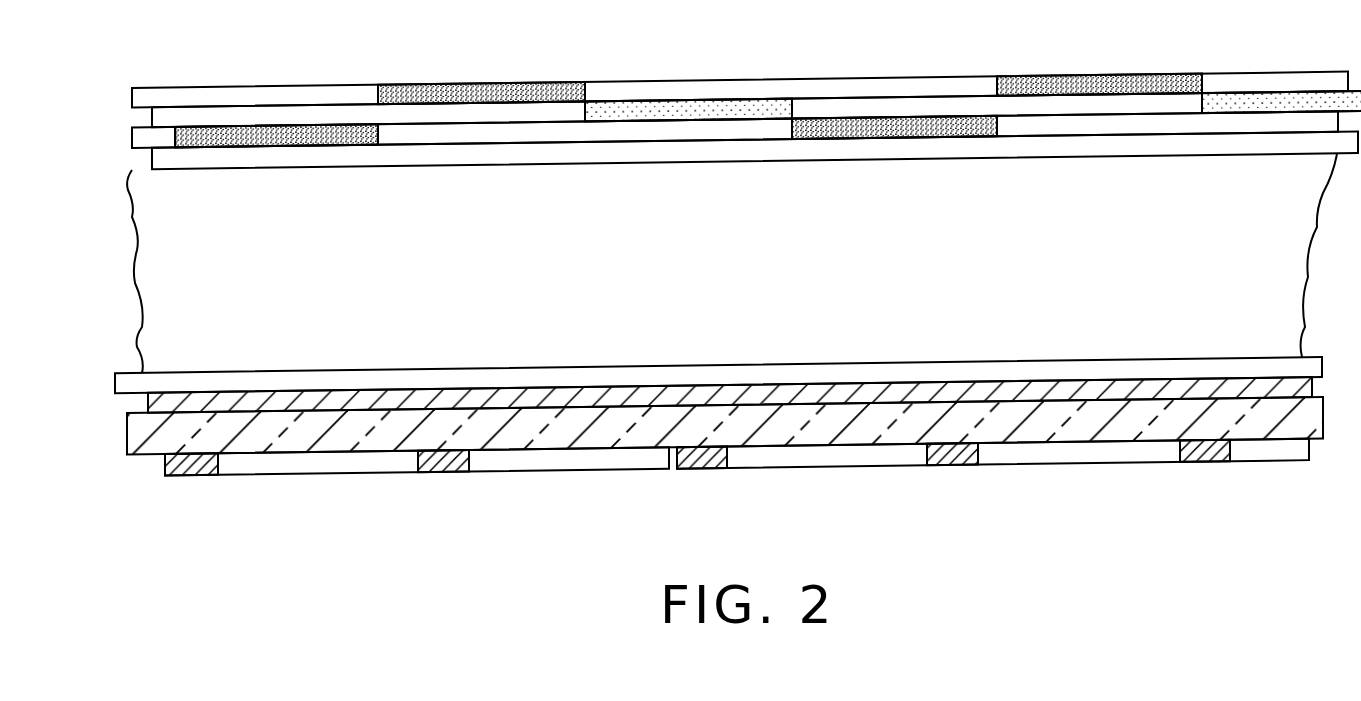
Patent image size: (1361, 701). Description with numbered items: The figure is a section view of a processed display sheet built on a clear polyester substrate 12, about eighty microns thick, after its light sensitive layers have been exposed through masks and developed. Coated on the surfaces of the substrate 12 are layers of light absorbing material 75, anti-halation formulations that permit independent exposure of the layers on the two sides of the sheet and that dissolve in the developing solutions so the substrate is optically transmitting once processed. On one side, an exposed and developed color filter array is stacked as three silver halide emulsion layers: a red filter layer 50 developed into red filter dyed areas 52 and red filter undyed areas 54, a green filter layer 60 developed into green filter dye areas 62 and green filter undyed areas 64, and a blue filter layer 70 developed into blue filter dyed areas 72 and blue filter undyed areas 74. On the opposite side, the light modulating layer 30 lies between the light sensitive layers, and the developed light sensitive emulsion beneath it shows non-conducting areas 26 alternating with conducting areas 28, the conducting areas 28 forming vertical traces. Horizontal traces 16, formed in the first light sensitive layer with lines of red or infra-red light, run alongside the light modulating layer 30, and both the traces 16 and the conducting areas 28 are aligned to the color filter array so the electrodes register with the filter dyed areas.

The substrate 12 is at (155, 237).
The horizontal traces 16 is at (148, 402).
The non-conducting areas 26 is at (302, 465).
The conducting areas 28 is at (453, 472).
The light modulating layer 30 is at (143, 447).
The red filter layer 50 is at (122, 136).
The red filter dyed areas 52 is at (268, 136).
The red filter undyed areas 54 is at (442, 132).
The green filter layer 60 is at (140, 114).
The green filter dye areas 62 is at (670, 107).
The green filter undyed areas 64 is at (843, 108).
The blue filter layer 70 is at (121, 86).
The blue filter dyed areas 72 is at (1047, 77).
The blue filter undyed areas 74 is at (1248, 80).
The light absorbing material 75 is at (1198, 133).